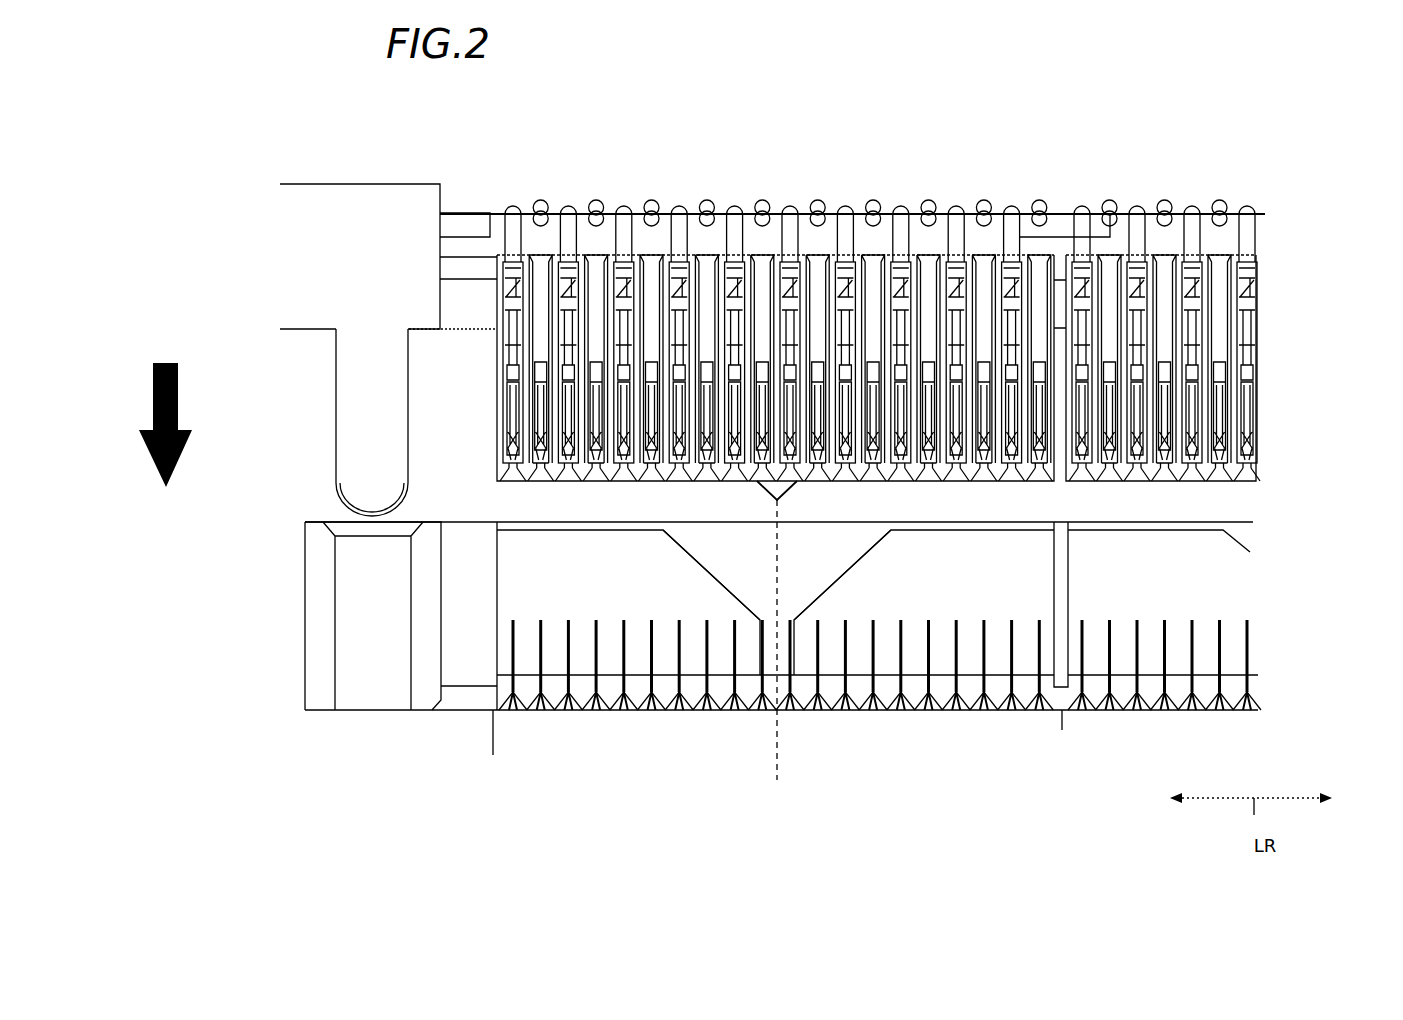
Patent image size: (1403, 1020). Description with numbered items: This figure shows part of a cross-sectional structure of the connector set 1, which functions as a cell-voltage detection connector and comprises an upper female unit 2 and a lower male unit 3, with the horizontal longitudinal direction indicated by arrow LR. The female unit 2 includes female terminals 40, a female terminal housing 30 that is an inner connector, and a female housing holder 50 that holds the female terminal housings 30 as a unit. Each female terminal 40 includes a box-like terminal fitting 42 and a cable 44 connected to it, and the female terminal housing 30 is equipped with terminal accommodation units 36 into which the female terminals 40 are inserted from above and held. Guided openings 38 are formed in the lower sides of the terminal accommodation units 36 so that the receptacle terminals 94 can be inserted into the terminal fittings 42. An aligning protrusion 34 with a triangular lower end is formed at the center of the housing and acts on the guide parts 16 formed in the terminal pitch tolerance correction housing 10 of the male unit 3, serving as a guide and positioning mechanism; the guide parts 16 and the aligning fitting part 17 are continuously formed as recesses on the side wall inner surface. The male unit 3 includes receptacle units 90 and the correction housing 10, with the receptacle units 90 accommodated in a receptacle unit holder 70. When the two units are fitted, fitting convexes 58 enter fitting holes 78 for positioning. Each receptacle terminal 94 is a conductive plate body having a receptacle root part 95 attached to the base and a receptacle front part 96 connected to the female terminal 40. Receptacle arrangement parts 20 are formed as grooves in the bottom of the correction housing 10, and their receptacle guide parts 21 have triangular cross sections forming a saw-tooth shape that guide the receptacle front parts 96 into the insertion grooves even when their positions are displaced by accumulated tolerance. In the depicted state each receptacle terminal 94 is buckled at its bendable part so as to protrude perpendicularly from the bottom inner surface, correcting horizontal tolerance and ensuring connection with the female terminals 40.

The connector set 1 is at (187, 112).
The female unit 2 is at (250, 225).
The male unit 3 is at (280, 680).
The terminal pitch tolerance correction housing 10 is at (497, 557).
The guide parts 16 is at (833, 580).
The aligning fitting part 17 is at (757, 648).
The receptacle arrangement parts 20 is at (877, 729).
The receptacle guide parts 21 is at (877, 729).
The female terminal housing 30 is at (500, 364).
The aligning protrusion 34 is at (780, 494).
The terminal accommodation units 36 is at (892, 256).
The guided openings 38 is at (1216, 482).
The female terminals 40 is at (798, 315).
The terminal fitting 42 is at (500, 430).
The cable 44 is at (622, 206).
The female housing holder 50 is at (298, 184).
The fitting convexes 58 is at (356, 466).
The receptacle unit holder 70 is at (306, 622).
The fitting holes 78 is at (340, 675).
The receptacle unit 90 is at (493, 730).
The receptacle terminals 94 is at (877, 729).
The receptacle root part 95 is at (513, 660).
The receptacle front part 96 is at (514, 660).